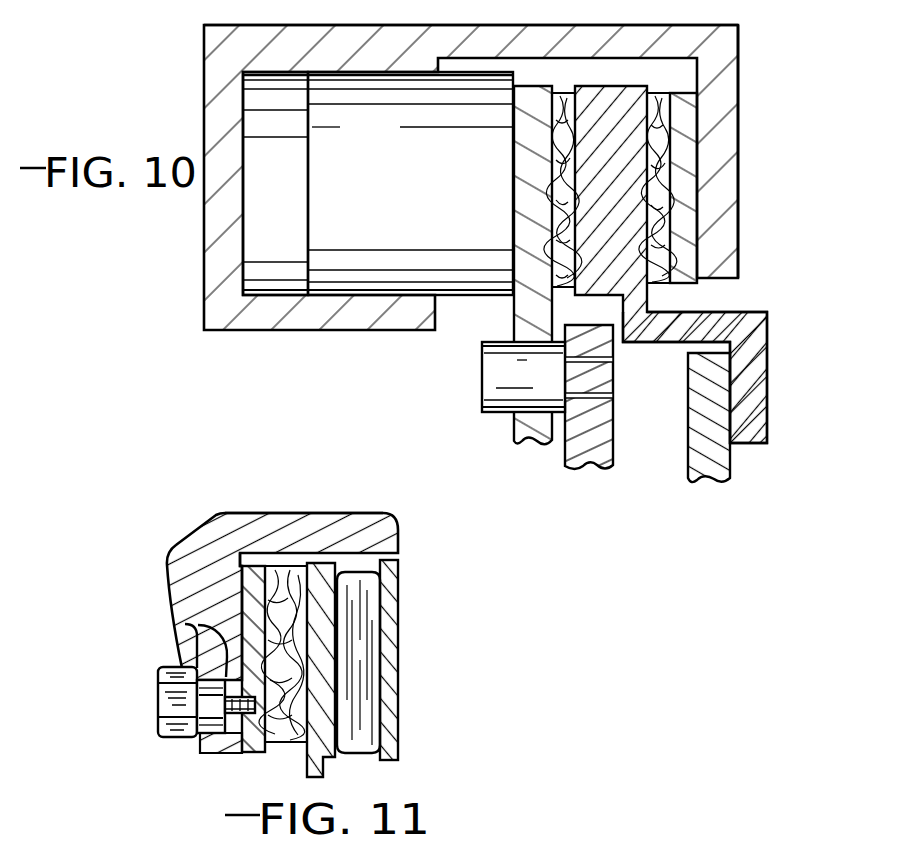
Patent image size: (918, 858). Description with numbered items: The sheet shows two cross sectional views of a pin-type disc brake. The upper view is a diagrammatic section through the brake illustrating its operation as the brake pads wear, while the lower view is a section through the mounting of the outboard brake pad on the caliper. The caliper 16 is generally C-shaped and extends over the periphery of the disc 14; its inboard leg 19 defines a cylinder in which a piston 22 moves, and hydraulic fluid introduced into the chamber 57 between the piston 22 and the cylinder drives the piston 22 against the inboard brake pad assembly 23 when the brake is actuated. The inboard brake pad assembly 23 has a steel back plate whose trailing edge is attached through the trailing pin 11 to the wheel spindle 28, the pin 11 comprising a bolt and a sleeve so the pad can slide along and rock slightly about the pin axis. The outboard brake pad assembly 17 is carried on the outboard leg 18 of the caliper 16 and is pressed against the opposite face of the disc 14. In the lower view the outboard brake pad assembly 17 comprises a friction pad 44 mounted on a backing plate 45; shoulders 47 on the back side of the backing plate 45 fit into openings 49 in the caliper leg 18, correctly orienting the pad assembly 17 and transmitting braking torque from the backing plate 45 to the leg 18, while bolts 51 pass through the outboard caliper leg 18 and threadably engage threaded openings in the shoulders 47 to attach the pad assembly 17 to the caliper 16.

In FIG. 10, the pin 11 is at (481, 396).
In FIG. 10, the disc 14 is at (625, 84).
In FIG. 11, the disc 14 is at (337, 762).
In FIG. 10, the caliper 16 is at (493, 25).
In FIG. 11, the caliper 16 is at (326, 513).
In FIG. 10, the outboard brake pad assembly 17 is at (682, 293).
In FIG. 10, the outboard leg 18 is at (747, 149).
In FIG. 11, the outboard leg 18 is at (162, 575).
In FIG. 10, the inboard leg 19 is at (204, 78).
In FIG. 10, the piston 22 is at (437, 302).
In FIG. 10, the inboard brake pad assembly 23 is at (511, 318).
In FIG. 10, the wheel spindle 28 is at (613, 352).
In FIG. 10, the chamber 57 is at (252, 211).
In FIG. 11, the friction pad 44 is at (282, 745).
In FIG. 11, the backing plate 45 is at (248, 563).
In FIG. 11, the shoulders 47 is at (238, 728).
In FIG. 11, the openings 49 is at (185, 624).
In FIG. 11, the bolts 51 is at (160, 716).